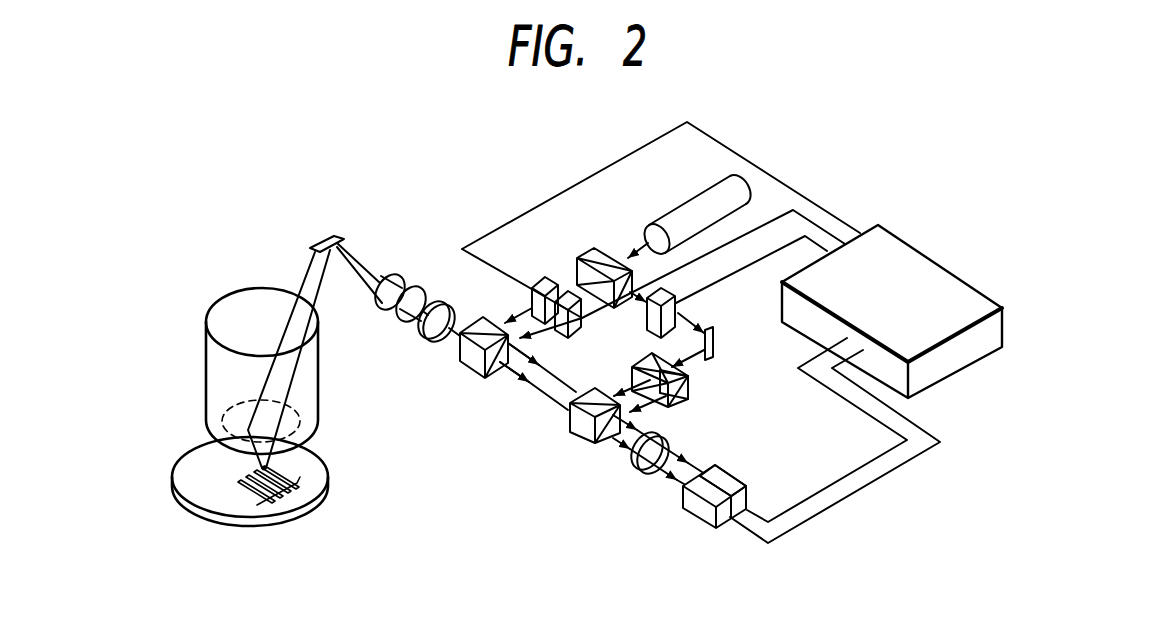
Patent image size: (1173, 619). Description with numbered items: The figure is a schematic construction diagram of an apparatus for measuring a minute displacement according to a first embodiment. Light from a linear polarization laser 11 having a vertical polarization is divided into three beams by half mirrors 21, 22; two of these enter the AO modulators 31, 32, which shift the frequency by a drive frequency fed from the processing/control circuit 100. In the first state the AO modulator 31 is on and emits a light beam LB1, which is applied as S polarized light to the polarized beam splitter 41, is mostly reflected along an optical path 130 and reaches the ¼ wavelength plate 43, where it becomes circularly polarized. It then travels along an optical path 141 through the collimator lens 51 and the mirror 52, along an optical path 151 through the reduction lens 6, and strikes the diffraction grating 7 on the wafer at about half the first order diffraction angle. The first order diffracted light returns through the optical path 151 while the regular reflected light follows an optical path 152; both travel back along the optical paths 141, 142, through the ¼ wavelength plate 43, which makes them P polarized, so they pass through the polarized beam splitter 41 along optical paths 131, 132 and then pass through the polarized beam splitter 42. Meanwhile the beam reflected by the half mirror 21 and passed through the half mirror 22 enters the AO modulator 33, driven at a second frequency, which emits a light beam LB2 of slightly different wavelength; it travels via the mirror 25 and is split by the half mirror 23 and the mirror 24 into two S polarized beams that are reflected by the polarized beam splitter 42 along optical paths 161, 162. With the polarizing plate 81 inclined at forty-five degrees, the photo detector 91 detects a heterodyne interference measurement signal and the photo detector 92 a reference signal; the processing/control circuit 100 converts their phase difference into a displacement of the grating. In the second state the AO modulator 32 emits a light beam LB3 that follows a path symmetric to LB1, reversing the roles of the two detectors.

The reduction lens 6 is at (319, 392).
The diffraction grating 7 is at (284, 497).
The linear polarization laser 11 is at (683, 205).
The half mirror 21 is at (595, 249).
The half mirror 22 is at (629, 262).
The half mirror 23 is at (633, 373).
The mirror 24 is at (690, 386).
The mirror 25 is at (716, 341).
The AO modulator 31 is at (535, 284).
The AO modulator 32 is at (560, 290).
The AO modulator 33 is at (655, 318).
The polarized beam splitter 41 is at (488, 370).
The polarized beam splitter 42 is at (581, 446).
The ¼ wavelength plate 43 is at (427, 333).
The collimator lens 51 is at (401, 278).
The mirror 52 is at (336, 237).
The polarizing plate 81 is at (647, 470).
The photo detector 91 is at (697, 517).
The photo detector 92 is at (736, 472).
The processing/control circuit 100 is at (914, 244).
The optical path 130 is at (446, 338).
The optical path 131 is at (512, 380).
The optical path 132 is at (552, 382).
The optical path 141 is at (323, 279).
The optical path 142 is at (306, 285).
The optical path 151 is at (318, 468).
The optical path 152 is at (248, 430).
The optical path 161 is at (618, 443).
The optical path 162 is at (632, 418).
The light beam LB1 is at (512, 305).
The light beam LB2 is at (690, 313).
The light beam LB3 is at (576, 330).